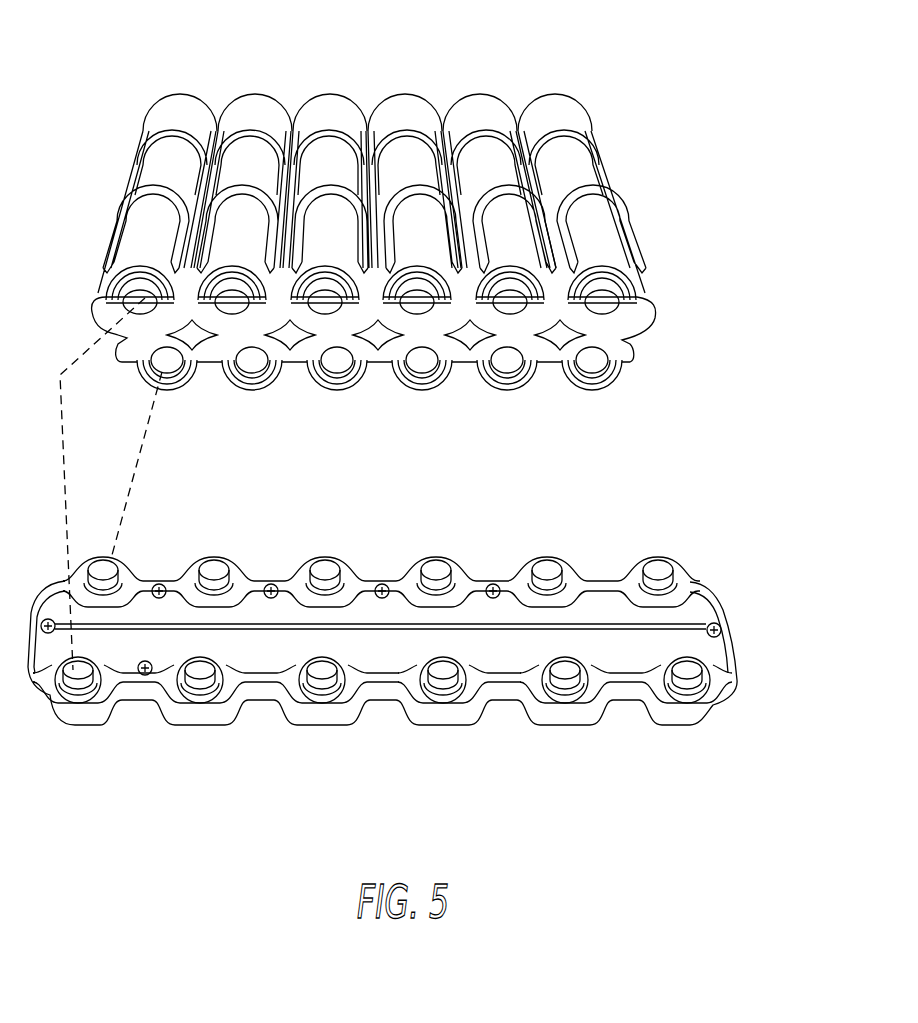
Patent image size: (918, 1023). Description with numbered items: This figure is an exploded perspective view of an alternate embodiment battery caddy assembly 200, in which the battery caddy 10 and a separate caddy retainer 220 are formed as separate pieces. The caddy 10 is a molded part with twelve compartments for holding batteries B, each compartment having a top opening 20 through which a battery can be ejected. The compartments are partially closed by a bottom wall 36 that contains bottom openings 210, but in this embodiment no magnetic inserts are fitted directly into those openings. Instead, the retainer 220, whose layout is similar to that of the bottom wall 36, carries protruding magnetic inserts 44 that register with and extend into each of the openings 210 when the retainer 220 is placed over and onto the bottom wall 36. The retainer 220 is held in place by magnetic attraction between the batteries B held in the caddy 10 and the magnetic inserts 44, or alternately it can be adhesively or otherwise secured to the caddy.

The battery caddy 10 is at (548, 93).
The top opening 20 is at (196, 92).
The batteries B is at (247, 160).
The bottom wall 36 is at (628, 318).
The bottom openings 210 is at (342, 362).
The battery caddy assembly 200 is at (703, 800).
The caddy retainer 220 is at (488, 572).
The magnetic inserts 44 is at (107, 568).